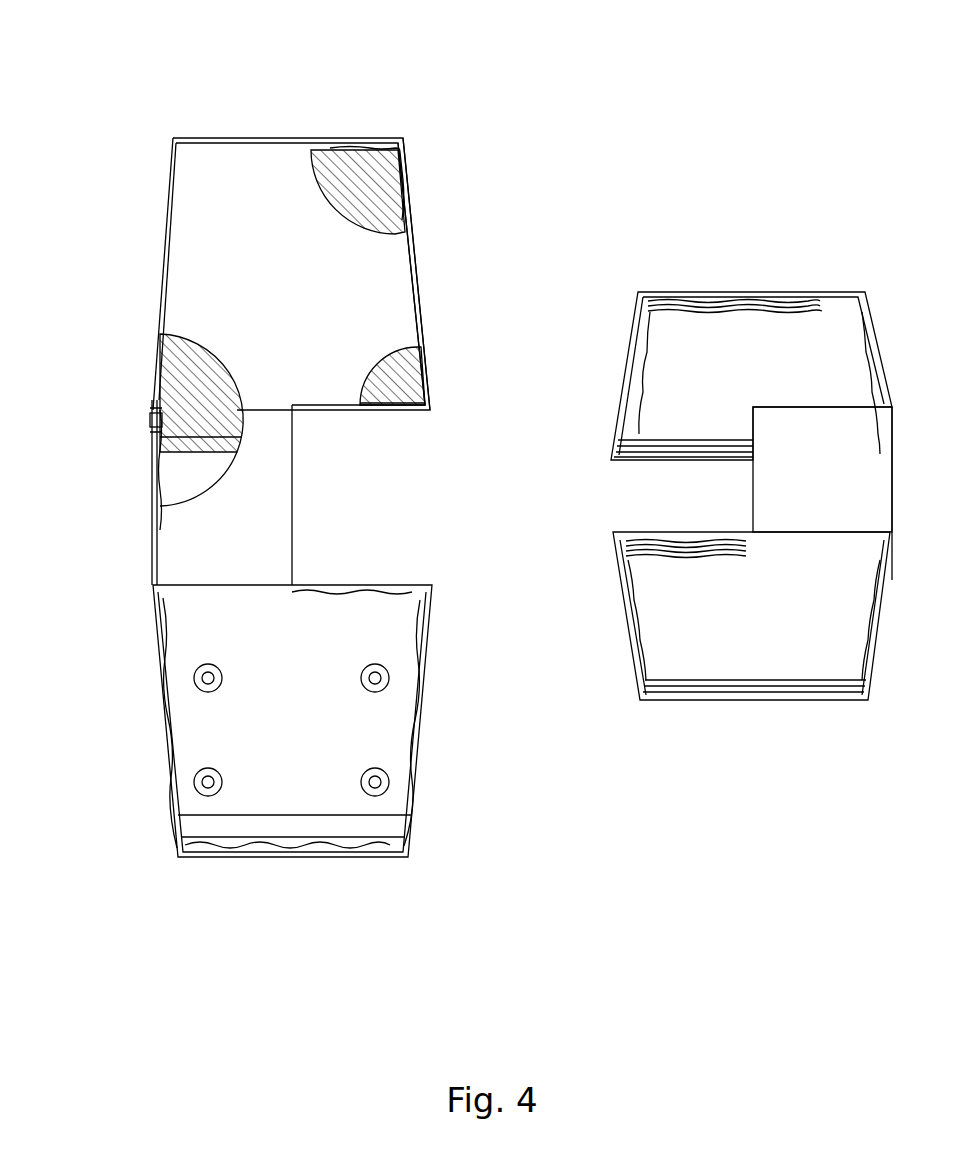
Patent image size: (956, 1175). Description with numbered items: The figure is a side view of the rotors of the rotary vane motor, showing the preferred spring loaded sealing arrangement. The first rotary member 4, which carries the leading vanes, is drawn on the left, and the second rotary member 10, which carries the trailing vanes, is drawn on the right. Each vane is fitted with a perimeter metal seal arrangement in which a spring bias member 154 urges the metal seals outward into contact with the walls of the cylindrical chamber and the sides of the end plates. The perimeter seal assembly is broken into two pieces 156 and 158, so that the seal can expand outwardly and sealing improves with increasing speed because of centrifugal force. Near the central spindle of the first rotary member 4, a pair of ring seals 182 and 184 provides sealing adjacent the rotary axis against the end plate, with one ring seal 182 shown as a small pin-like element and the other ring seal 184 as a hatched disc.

The first rotary member 4 is at (292, 880).
The second rotary member 10 is at (752, 725).
The spring bias member 154 is at (410, 182).
The perimeter seal assembly piece 156 is at (366, 140).
The perimeter seal assembly piece 158 is at (432, 378).
The ring seal 182 is at (150, 420).
The ring seal 184 is at (163, 505).